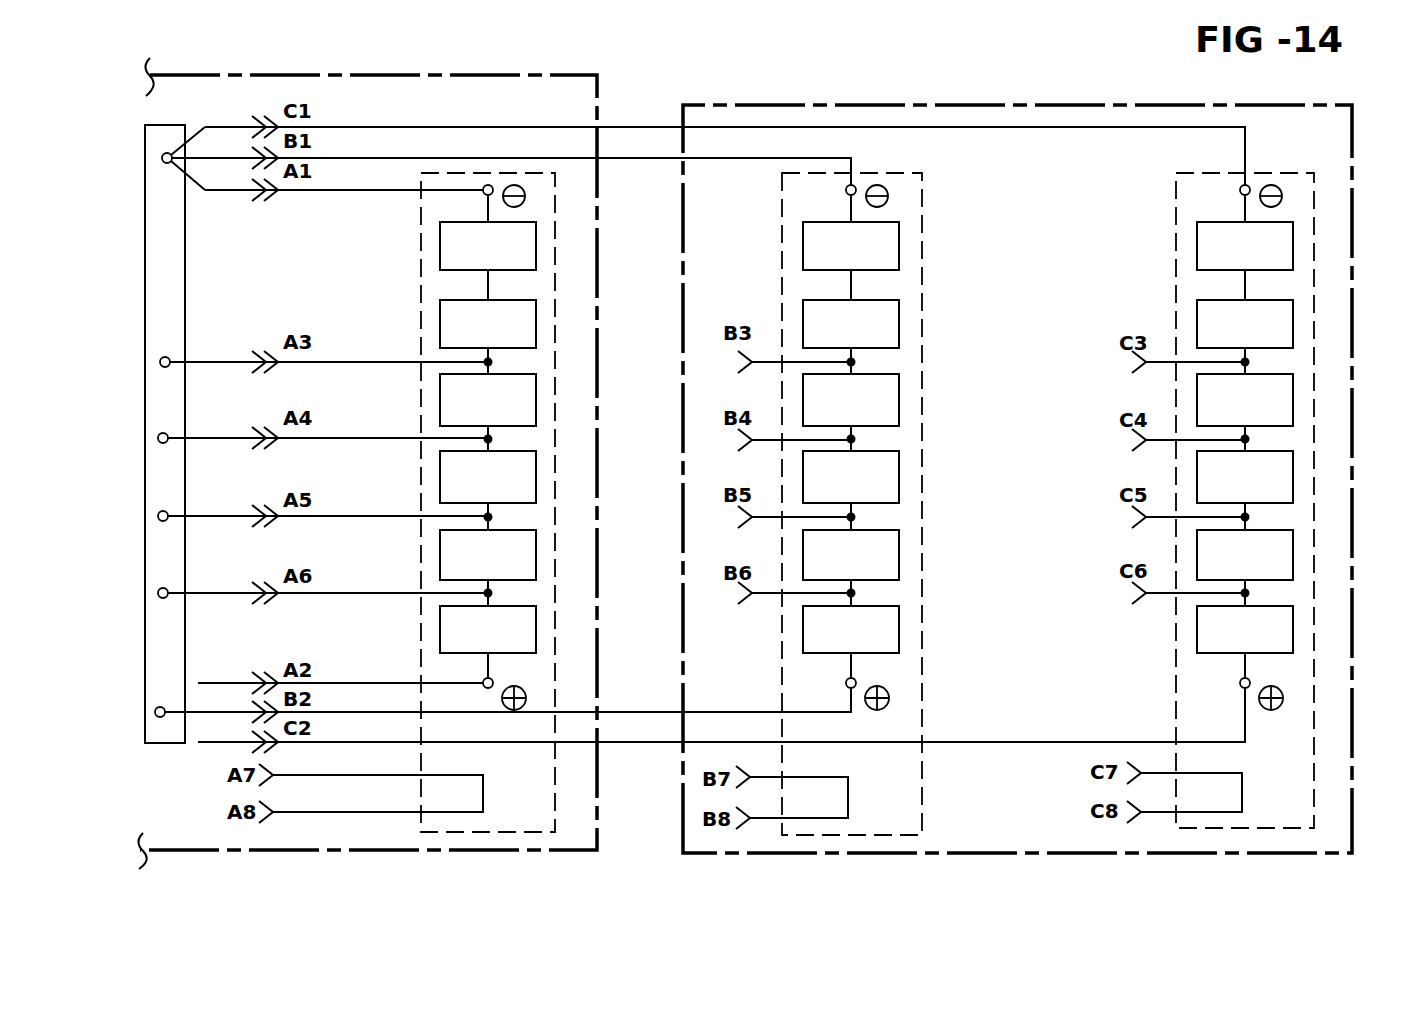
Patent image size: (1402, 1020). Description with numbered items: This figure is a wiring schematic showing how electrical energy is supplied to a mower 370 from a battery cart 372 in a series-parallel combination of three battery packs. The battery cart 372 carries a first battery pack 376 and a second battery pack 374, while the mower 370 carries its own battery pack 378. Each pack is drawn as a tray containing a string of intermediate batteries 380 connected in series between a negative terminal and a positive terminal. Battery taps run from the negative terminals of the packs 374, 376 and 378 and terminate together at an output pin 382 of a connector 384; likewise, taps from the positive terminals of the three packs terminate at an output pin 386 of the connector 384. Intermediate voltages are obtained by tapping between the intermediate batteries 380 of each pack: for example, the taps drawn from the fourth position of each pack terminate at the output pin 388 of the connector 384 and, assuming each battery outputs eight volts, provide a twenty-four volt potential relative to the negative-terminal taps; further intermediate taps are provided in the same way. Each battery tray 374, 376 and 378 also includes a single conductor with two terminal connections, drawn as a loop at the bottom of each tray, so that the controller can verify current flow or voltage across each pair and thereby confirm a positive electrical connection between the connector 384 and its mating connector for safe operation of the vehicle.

The mower 370 is at (487, 78).
The battery cart 372 is at (723, 102).
The second battery pack 374 is at (423, 342).
The first battery pack 376 is at (925, 260).
The battery pack 378 is at (1180, 203).
The intermediate batteries 380 is at (866, 447).
The output pin 382 is at (168, 163).
The connector 384 is at (177, 280).
The output pin 386 is at (160, 707).
The output pin 388 is at (163, 367).